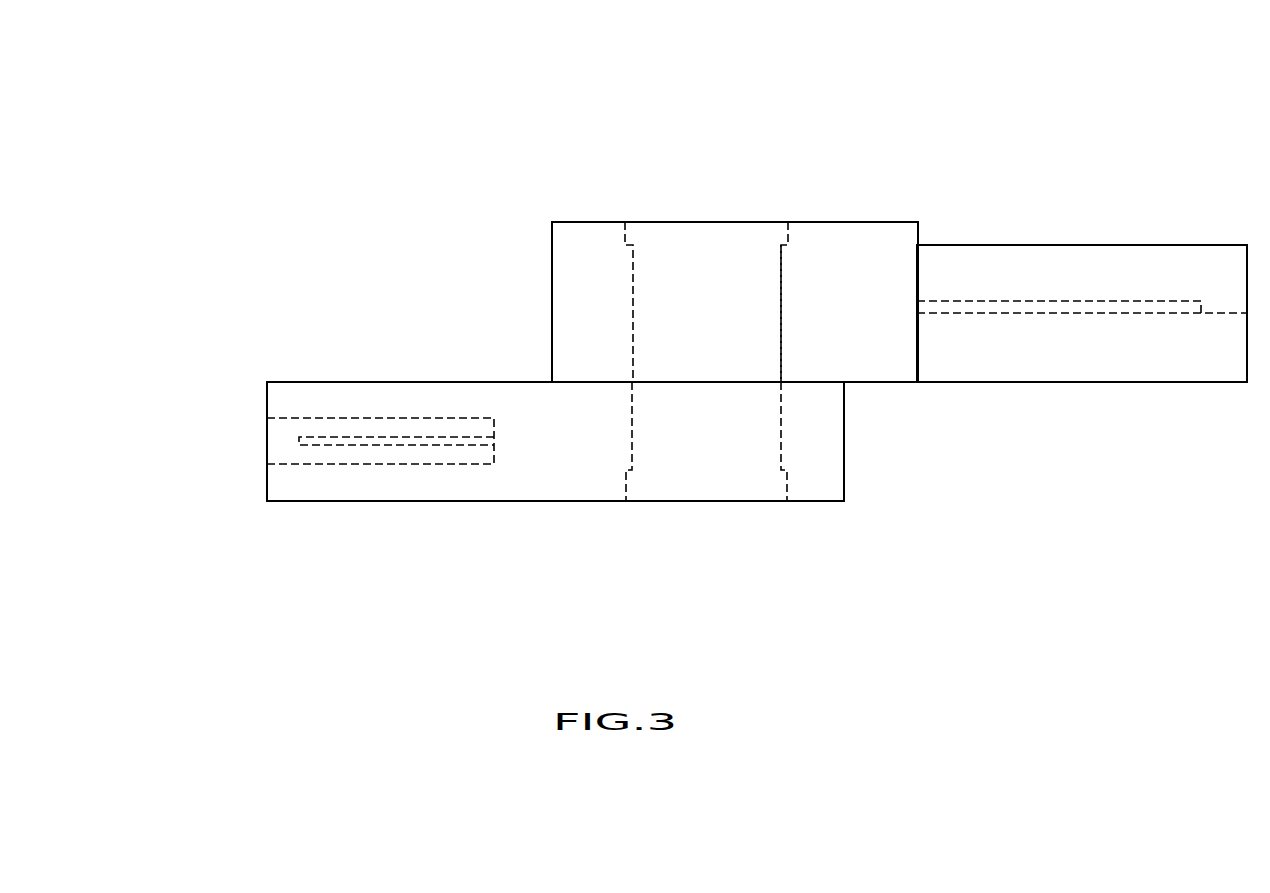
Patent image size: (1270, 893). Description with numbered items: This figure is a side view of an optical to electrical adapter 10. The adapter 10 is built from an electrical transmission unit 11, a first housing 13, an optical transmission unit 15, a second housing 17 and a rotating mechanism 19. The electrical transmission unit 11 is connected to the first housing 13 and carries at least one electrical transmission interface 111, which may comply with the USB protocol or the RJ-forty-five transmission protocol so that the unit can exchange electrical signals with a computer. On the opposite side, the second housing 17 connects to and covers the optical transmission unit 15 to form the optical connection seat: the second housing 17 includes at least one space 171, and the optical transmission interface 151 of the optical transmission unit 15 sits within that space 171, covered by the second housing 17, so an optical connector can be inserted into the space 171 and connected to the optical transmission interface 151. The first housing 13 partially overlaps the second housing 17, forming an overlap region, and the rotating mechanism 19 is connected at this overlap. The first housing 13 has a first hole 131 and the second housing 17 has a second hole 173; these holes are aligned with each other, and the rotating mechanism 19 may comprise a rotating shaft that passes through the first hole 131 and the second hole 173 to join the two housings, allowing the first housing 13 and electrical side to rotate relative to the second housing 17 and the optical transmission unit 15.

The optical to electrical adapter 10 is at (365, 118).
The electrical transmission unit 11 is at (1077, 372).
The electrical transmission interface 111 is at (1112, 305).
The first housing 13 is at (578, 232).
The first hole 131 is at (794, 298).
The optical transmission unit 15 is at (323, 387).
The optical transmission interface 151 is at (332, 438).
The second housing 17 is at (382, 493).
The space 171 is at (388, 428).
The second hole 173 is at (781, 440).
The rotating mechanism 19 is at (721, 250).